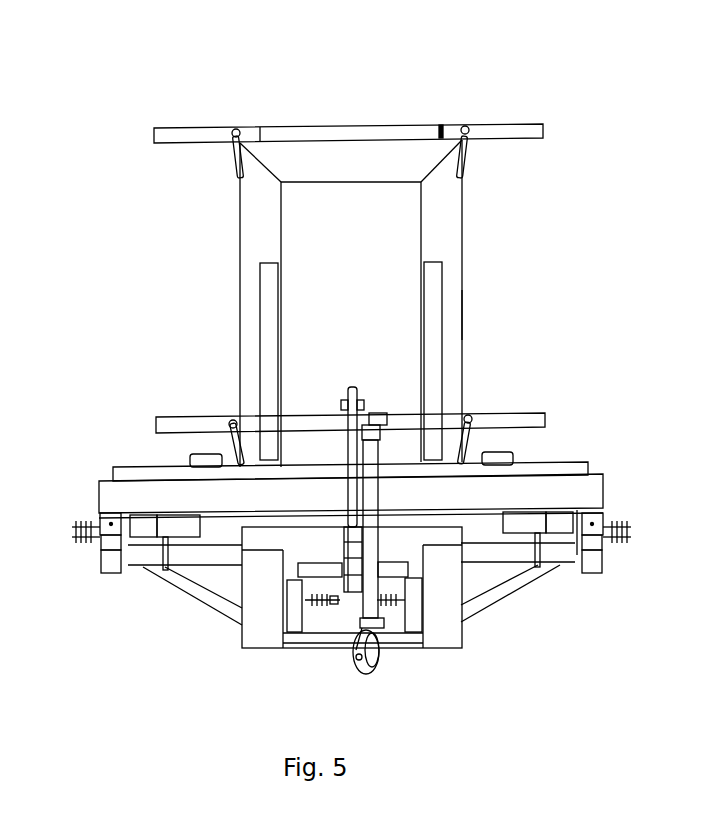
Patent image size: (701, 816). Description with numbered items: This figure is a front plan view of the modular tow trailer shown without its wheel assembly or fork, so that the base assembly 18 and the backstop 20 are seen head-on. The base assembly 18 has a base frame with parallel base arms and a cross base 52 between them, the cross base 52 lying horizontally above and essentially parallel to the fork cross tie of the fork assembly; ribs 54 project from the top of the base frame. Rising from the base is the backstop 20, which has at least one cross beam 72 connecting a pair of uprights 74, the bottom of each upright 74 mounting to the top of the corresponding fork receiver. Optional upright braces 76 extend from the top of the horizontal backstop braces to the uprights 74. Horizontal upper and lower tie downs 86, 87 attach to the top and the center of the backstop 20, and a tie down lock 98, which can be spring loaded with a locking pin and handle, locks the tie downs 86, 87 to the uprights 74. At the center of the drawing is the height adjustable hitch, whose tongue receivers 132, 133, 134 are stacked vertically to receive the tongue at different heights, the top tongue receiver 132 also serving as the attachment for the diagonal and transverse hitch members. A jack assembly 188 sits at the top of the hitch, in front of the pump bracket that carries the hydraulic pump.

The base assembly 18 is at (588, 488).
The backstop 20 is at (455, 323).
The cross base 52 is at (118, 496).
The ribs 54 is at (563, 468).
The cross beam 72 is at (303, 157).
The uprights 74 is at (247, 220).
The upright braces 76 is at (440, 272).
The upper tie down 86 is at (384, 128).
The lower tie down 87 is at (523, 417).
The tie down lock 98 is at (468, 132).
The top tongue receiver 132 is at (340, 530).
The tongue receiver 133 is at (345, 563).
The tongue receiver 134 is at (360, 592).
The jack assembly 188 is at (378, 600).